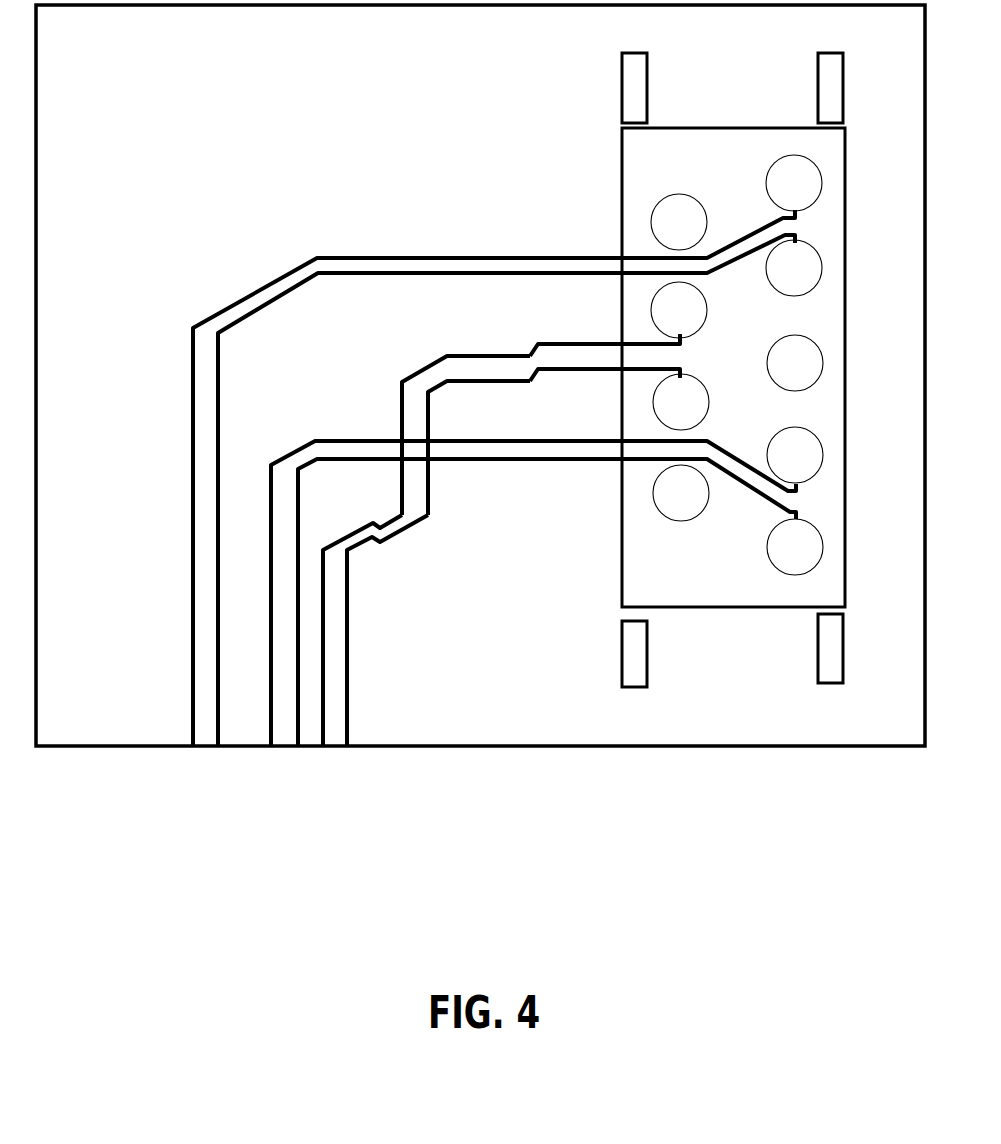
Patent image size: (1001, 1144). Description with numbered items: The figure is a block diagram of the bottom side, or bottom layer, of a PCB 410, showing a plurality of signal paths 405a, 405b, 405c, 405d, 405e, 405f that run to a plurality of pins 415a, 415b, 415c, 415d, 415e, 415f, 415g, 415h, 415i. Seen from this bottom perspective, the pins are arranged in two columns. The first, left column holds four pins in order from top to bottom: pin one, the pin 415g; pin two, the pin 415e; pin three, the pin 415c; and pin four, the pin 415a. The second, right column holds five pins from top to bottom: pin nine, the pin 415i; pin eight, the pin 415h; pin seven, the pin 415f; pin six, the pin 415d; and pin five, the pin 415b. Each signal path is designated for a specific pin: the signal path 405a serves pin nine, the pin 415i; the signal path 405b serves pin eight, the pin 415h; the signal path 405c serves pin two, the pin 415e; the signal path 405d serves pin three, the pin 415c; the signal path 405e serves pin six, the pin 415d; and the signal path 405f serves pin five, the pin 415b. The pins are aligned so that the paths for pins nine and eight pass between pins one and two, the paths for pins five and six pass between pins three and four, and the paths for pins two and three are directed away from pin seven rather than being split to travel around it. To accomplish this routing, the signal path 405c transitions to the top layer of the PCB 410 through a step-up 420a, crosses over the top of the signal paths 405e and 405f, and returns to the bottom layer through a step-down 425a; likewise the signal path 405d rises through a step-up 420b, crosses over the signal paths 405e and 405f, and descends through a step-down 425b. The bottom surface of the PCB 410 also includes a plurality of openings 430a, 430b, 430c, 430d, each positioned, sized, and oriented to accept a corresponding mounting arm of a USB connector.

The PCB 410 is at (133, 747).
The signal path 405a is at (388, 256).
The signal path 405b is at (235, 327).
The signal path 405c is at (443, 353).
The signal path 405d is at (433, 391).
The signal path 405e is at (313, 438).
The signal path 405f is at (505, 462).
The pin 415a is at (675, 521).
The pin 415b is at (775, 565).
The pin 415c is at (697, 424).
The pin 415d is at (794, 427).
The pin 415e is at (682, 338).
The pin 415f is at (773, 341).
The pin 415g is at (679, 194).
The pin 415h is at (782, 295).
The pin 415i is at (777, 207).
The step-up 420a is at (538, 343).
The step-up 420b is at (536, 378).
The step-down 425a is at (372, 518).
The step-down 425b is at (381, 541).
The opening 430a is at (630, 688).
The opening 430b is at (824, 684).
The opening 430c is at (630, 53).
The opening 430d is at (827, 53).